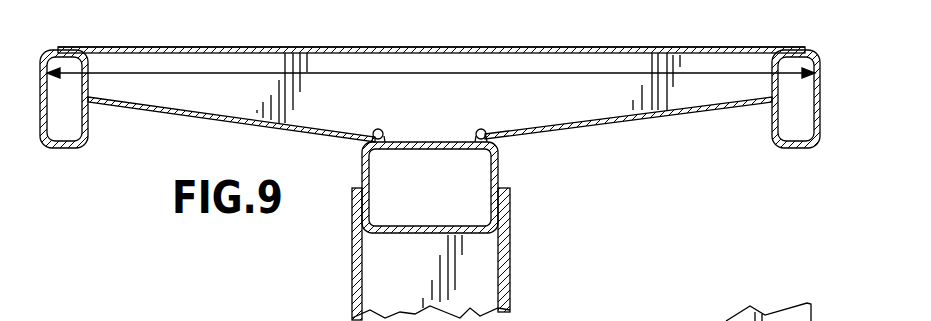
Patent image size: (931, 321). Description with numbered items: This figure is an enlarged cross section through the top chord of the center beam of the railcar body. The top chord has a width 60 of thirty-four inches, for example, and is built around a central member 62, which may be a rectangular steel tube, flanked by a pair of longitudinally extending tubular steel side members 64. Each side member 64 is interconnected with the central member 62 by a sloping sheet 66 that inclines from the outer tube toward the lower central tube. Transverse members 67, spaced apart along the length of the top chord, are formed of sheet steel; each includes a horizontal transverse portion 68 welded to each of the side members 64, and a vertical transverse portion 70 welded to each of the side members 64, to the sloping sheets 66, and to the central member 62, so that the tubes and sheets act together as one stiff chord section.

The width 60 is at (430, 74).
The central member 62 is at (498, 172).
The tubular steel side member 64 is at (795, 149).
The sloping sheet 66 is at (711, 113).
The transverse member 67 is at (622, 47).
The horizontal transverse portion 68 is at (423, 47).
The vertical transverse portion 70 is at (612, 102).